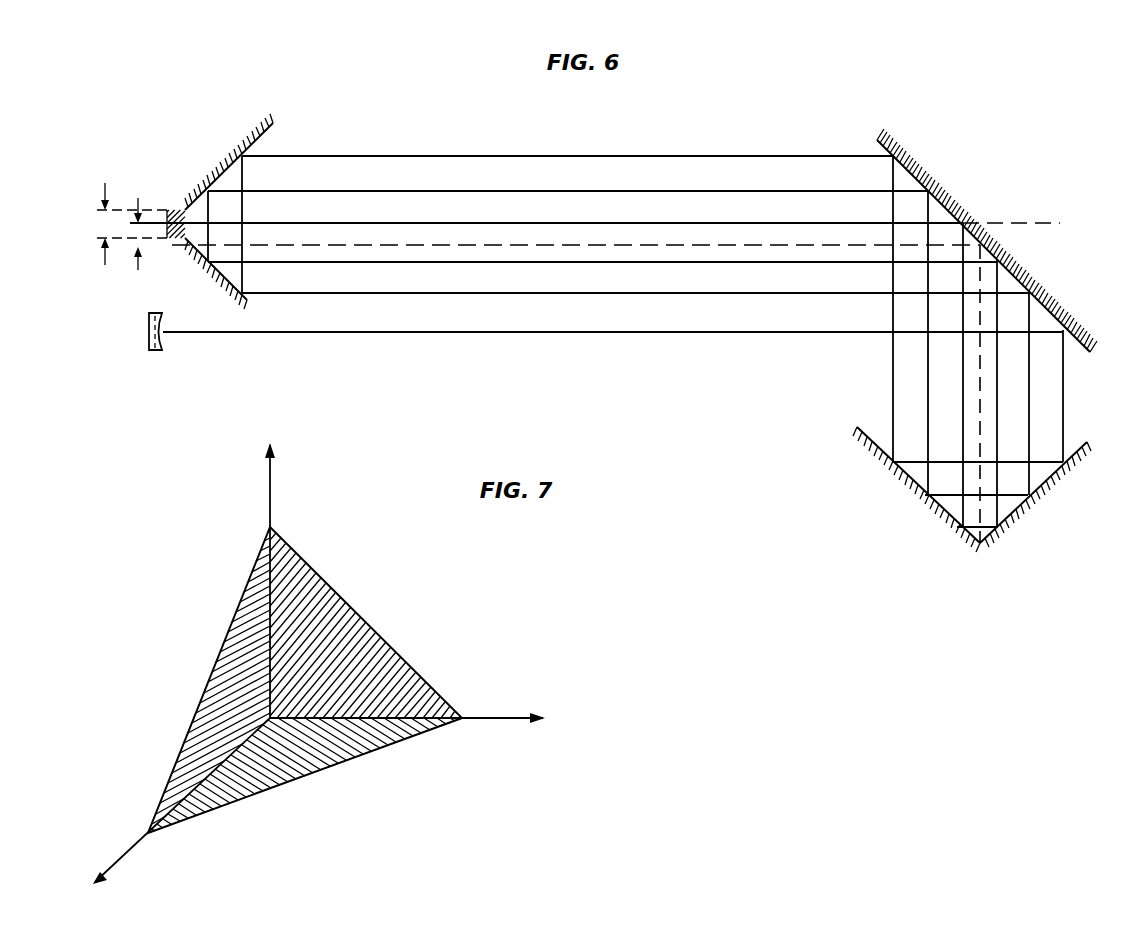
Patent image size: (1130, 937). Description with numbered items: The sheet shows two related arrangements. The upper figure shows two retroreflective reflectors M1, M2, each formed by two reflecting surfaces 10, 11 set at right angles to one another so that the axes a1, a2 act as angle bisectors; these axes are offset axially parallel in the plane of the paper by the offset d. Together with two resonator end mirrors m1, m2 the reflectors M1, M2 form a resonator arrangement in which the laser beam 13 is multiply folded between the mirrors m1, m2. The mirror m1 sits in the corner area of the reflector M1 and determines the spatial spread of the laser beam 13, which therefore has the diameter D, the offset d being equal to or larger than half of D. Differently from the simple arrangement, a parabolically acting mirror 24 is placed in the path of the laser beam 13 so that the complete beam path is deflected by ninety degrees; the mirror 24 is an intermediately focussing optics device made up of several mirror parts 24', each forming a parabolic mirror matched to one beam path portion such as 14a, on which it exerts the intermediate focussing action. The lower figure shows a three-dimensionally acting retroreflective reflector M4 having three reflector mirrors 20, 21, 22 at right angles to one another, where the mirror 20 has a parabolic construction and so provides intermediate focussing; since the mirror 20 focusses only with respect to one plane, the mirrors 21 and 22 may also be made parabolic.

In FIG. 6, the reflecting surface 10 is at (273, 123).
In FIG. 6, the reflecting surface 11 is at (247, 300).
In FIG. 6, the laser beam 13 is at (632, 333).
In FIG. 6, the beam path portion 14a is at (725, 223).
In FIG. 6, the parabolically acting mirror 24 is at (965, 222).
In FIG. 6, the mirror part 24' is at (989, 240).
In FIG. 6, the axis a1 is at (1027, 223).
In FIG. 6, the axis a2 is at (594, 250).
In FIG. 6, the retroreflective reflector M1 is at (229, 211).
In FIG. 6, the retroreflective reflector M2 is at (972, 504).
In FIG. 6, the resonator end mirror m1 is at (172, 204).
In FIG. 6, the resonator end mirror m2 is at (155, 346).
In FIG. 6, the laser beam diameter D is at (132, 224).
In FIG. 6, the offset d is at (145, 241).
In FIG. 7, the reflector mirror 20 is at (228, 648).
In FIG. 7, the reflector mirror 21 is at (357, 612).
In FIG. 7, the reflector mirror 22 is at (310, 768).
In FIG. 7, the retroreflective reflector M4 is at (315, 572).